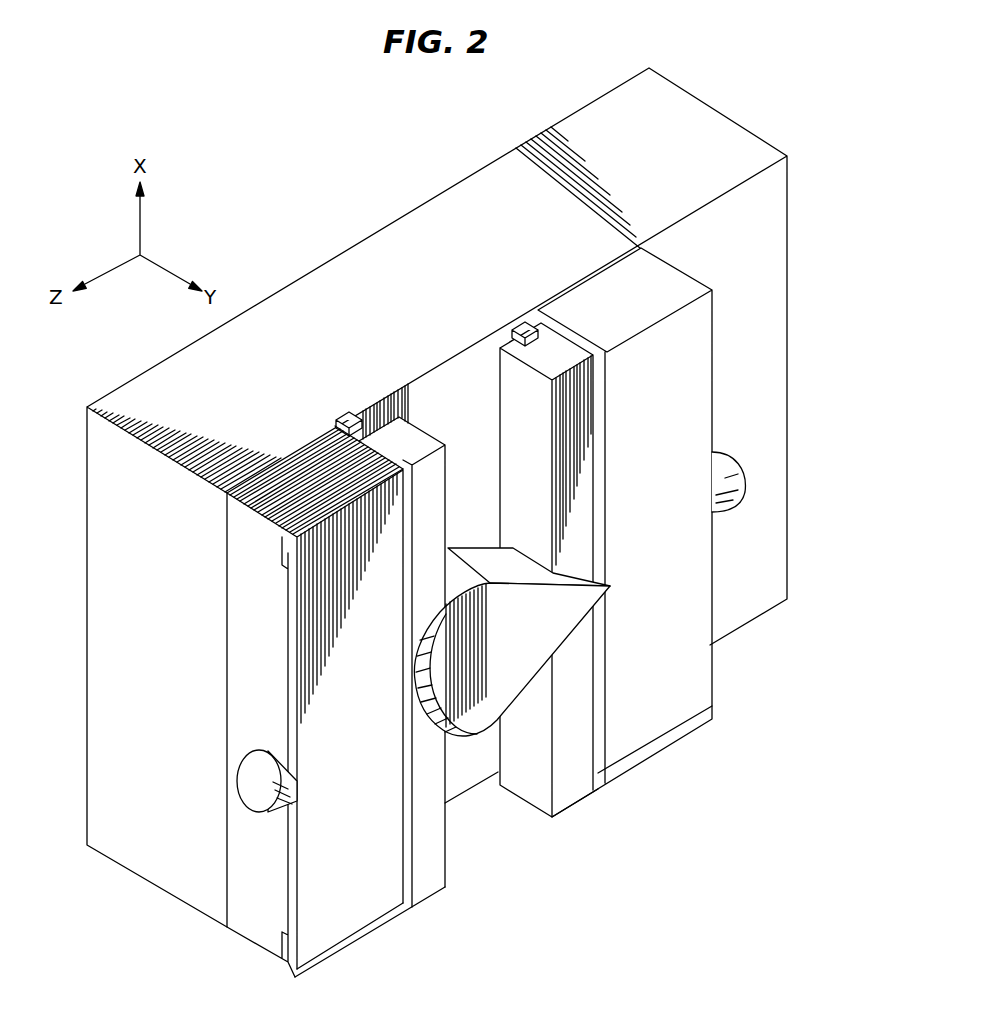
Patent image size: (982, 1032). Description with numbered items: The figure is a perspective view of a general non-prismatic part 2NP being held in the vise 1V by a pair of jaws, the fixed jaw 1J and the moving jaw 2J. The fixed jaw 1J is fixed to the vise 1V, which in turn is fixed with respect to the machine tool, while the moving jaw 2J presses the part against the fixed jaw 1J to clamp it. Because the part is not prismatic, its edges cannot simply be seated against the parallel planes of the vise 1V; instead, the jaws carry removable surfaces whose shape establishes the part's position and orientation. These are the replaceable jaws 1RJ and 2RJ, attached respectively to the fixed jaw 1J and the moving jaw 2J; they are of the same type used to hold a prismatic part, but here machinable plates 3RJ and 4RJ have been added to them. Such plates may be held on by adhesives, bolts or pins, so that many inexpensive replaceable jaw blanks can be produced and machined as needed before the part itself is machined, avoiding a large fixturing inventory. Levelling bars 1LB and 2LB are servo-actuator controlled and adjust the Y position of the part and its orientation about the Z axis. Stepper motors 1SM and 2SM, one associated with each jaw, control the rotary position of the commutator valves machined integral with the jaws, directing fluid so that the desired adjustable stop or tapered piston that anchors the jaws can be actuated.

The vise 1V is at (598, 78).
The fixed jaw 1J is at (248, 916).
The moving jaw 2J is at (712, 666).
The levelling bar 1LB is at (358, 420).
The levelling bar 2LB is at (528, 327).
The replaceable jaw 1RJ is at (350, 948).
The replaceable jaw 2RJ is at (652, 758).
The machinable plate 3RJ is at (446, 890).
The machinable plate 4RJ is at (550, 818).
The stepper motor 1SM is at (252, 796).
The stepper motor 2SM is at (737, 480).
The non-prismatic part 2NP is at (542, 624).